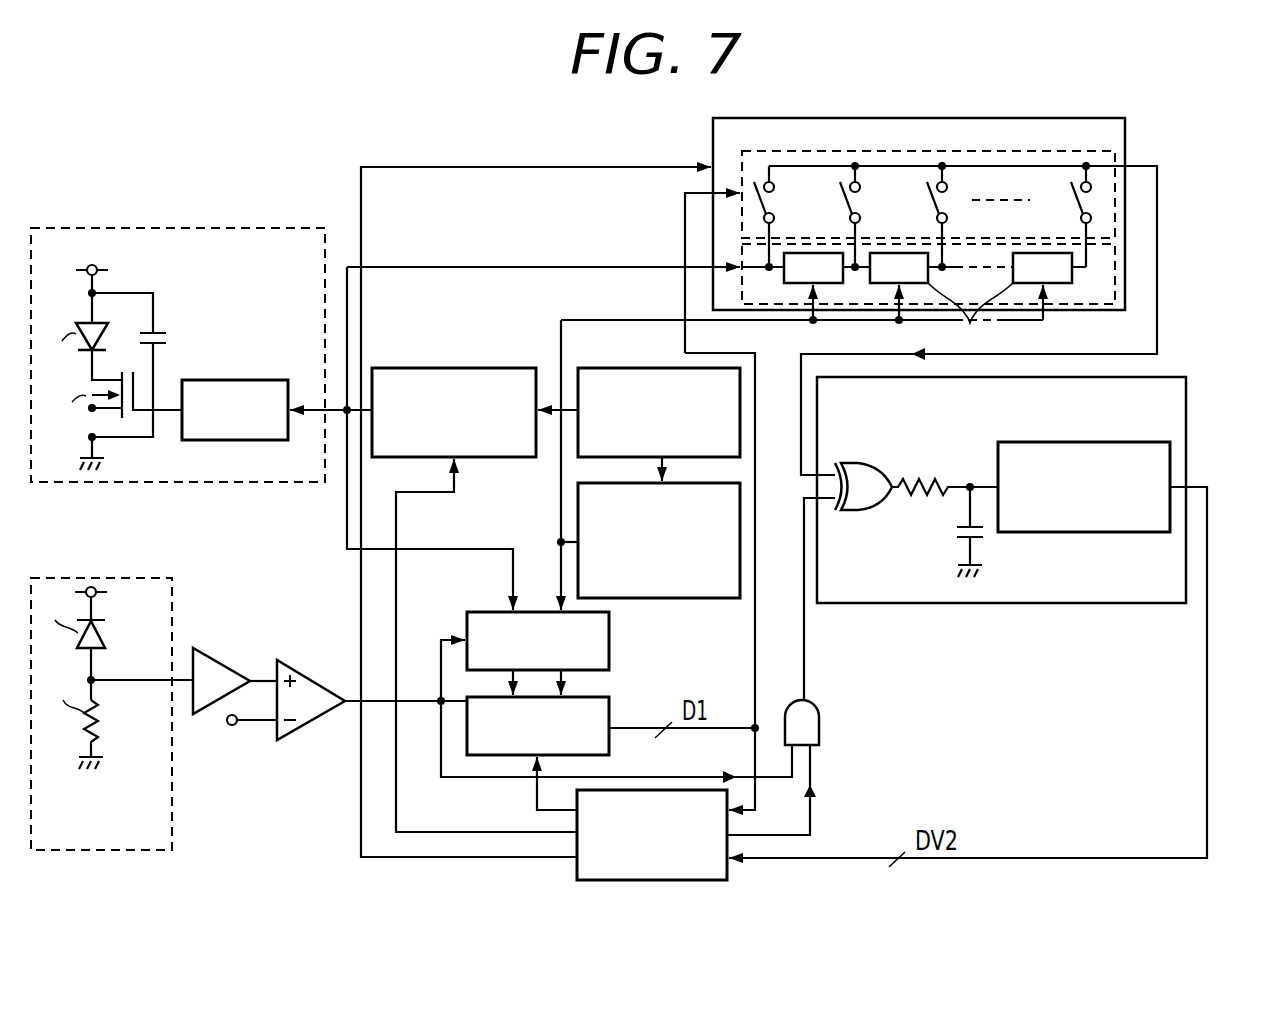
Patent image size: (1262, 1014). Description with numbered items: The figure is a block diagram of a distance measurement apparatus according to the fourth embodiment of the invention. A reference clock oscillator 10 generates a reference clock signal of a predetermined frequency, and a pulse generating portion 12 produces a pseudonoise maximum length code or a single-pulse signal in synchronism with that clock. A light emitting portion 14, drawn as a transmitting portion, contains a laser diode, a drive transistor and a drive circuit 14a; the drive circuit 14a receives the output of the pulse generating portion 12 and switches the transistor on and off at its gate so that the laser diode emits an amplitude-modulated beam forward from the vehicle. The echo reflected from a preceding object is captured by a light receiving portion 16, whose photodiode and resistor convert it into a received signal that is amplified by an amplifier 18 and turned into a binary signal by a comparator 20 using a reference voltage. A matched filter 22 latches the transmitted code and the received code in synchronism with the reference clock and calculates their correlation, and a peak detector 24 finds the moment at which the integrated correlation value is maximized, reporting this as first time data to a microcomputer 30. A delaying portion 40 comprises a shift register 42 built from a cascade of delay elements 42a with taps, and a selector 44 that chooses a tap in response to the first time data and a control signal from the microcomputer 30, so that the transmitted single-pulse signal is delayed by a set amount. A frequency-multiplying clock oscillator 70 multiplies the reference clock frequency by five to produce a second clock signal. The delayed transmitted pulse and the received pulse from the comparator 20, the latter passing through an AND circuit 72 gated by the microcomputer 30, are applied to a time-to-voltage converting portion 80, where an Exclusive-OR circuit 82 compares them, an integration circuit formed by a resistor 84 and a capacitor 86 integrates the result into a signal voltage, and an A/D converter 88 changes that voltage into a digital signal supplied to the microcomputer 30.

The reference clock oscillator 10 is at (600, 368).
The pulse generating portion 12 is at (483, 368).
The light emitting portion 14 is at (270, 233).
The drive circuit 14a is at (250, 378).
The light receiving portion 16 is at (172, 822).
The amplifier 18 is at (236, 634).
The comparator 20 is at (313, 666).
The matched filter 22 is at (612, 627).
The peak detector 24 is at (612, 705).
The microcomputer 30 is at (577, 872).
The delaying portion 40 is at (1125, 134).
The shift register 42 is at (1115, 258).
The delay elements 42a is at (970, 319).
The selector 44 is at (1115, 175).
The frequency-multiplying clock oscillator 70 is at (705, 600).
The AND circuit 72 is at (820, 722).
The time-to-voltage converting portion 80 is at (1186, 405).
The Exclusive-OR circuit 82 is at (850, 463).
The resistor 84 is at (915, 479).
The capacitor 86 is at (955, 532).
The A/D converter 88 is at (1122, 534).